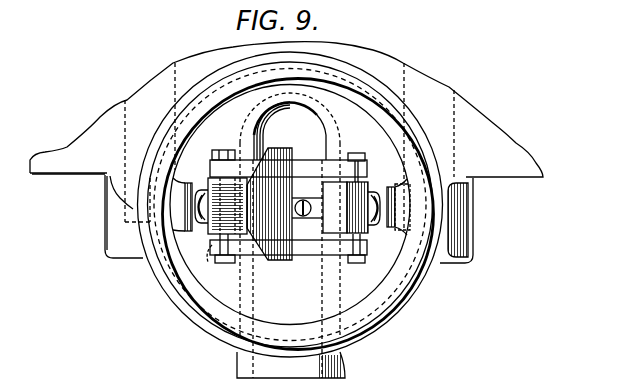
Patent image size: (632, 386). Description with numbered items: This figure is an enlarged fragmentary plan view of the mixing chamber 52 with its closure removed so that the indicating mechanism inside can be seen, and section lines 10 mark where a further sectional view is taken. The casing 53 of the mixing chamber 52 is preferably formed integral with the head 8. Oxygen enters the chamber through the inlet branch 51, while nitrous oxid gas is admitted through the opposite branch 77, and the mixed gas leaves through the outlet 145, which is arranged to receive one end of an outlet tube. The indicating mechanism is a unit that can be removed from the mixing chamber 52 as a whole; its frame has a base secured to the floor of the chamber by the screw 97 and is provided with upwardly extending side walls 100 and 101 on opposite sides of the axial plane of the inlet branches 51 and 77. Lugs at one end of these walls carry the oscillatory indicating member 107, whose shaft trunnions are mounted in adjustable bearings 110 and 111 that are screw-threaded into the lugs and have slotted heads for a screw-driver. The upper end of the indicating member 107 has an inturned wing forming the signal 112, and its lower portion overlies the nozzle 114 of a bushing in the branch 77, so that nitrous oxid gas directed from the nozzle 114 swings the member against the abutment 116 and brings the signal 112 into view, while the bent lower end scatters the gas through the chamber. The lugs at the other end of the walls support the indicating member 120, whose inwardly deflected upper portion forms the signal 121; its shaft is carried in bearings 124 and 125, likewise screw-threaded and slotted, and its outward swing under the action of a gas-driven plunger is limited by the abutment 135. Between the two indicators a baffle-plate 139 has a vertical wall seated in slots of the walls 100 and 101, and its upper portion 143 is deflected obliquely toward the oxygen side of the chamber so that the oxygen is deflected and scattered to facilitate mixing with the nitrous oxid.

The head 8 is at (496, 141).
The section line 10 is at (100, 207).
The inlet branch 51 is at (185, 196).
The mixing chamber 52 is at (290, 205).
The casing 53 is at (405, 303).
The inlet branch 77 is at (360, 195).
The screw 97 is at (307, 216).
The side wall 100 is at (330, 246).
The side wall 101 is at (323, 165).
The oscillatory indicating member 107 is at (460, 238).
The adjustable bearing 110 is at (428, 292).
The adjustable bearing 111 is at (402, 117).
The signal 112 is at (398, 192).
The nozzle 114 is at (415, 283).
The abutment 116 is at (403, 193).
The indicating member 120 is at (197, 226).
The signal 121 is at (208, 222).
The bearing 124 is at (224, 255).
The bearing 125 is at (281, 196).
The abutment 135 is at (195, 193).
The baffle-plate 139 is at (250, 180).
The upper portion of baffle-plate 143 is at (282, 250).
The outlet 145 is at (245, 366).